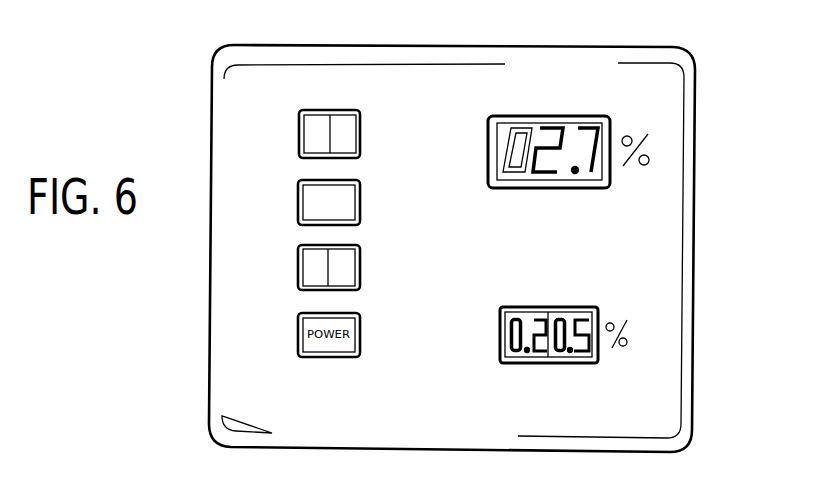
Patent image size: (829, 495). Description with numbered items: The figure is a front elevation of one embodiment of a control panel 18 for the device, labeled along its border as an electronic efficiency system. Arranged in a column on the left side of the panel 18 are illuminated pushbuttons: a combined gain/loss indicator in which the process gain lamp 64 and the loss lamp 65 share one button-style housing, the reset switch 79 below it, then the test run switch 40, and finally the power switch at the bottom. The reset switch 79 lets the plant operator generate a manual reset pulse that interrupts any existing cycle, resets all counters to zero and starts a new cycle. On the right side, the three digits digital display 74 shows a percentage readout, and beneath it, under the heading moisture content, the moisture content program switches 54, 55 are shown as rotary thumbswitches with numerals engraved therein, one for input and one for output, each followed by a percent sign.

The control panel 18 is at (718, 137).
The process gain lamp 64 is at (300, 122).
The loss lamp 65 is at (352, 121).
The reset switch 79 is at (299, 196).
The test run switch 40 is at (298, 258).
The three digits digital display 74 is at (488, 146).
The moisture content program switch 54 is at (505, 342).
The moisture content program switch 55 is at (593, 348).